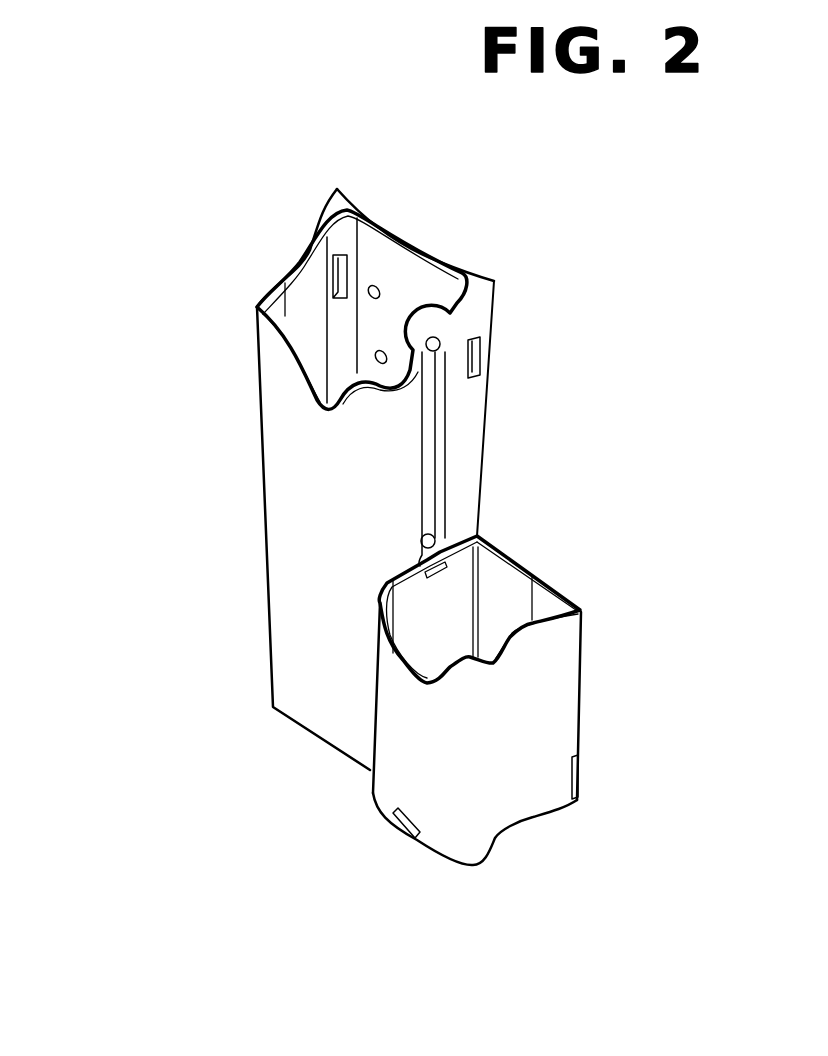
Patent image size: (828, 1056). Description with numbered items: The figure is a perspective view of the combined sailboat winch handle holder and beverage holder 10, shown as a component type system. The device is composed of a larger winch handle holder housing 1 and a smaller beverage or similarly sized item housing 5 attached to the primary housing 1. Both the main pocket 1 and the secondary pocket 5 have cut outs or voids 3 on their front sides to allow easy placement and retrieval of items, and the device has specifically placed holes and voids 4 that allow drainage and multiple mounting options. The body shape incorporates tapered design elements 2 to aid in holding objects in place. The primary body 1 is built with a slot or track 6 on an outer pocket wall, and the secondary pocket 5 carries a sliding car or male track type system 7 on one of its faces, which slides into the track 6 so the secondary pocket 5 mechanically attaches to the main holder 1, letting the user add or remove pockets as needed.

The winch handle holder and beverage holder 10 is at (168, 125).
The winch handle holder housing 1 is at (323, 585).
The tapered design elements 2 is at (503, 647).
The cut outs or voids 3 is at (333, 403).
The holes and voids 4 is at (340, 264).
The beverage or similarly sized item housing 5 is at (505, 713).
The slot/track 6 is at (428, 427).
The sliding car or male track type system 7 is at (440, 543).